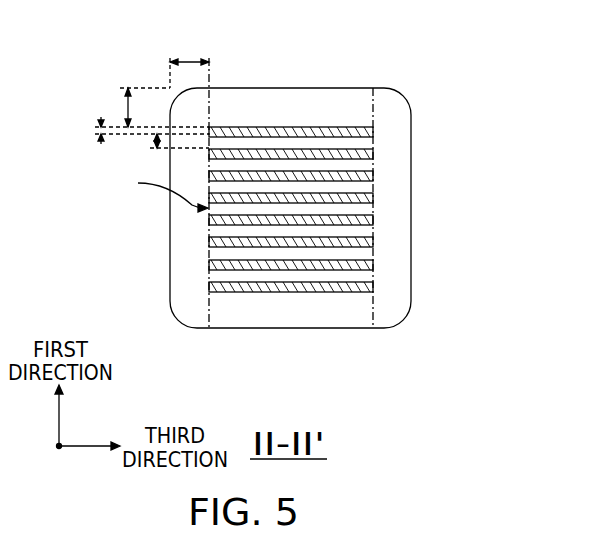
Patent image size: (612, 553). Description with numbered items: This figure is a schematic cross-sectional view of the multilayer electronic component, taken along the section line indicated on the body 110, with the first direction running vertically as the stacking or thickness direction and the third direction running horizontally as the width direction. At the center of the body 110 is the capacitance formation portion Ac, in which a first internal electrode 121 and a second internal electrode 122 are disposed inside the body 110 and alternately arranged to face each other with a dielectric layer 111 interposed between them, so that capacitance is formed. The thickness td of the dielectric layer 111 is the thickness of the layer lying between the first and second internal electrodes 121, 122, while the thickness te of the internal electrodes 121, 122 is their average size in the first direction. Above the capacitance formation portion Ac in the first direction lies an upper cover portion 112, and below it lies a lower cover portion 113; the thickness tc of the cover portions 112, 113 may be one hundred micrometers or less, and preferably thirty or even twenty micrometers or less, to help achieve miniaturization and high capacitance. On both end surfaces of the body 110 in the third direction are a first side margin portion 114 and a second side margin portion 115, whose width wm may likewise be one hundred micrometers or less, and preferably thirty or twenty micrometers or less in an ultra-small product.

The body 110 is at (276, 88).
The dielectric layer 111 is at (365, 163).
The upper cover portion 112 is at (226, 92).
The lower cover portion 113 is at (257, 314).
The first side margin portion 114 is at (175, 245).
The second side margin portion 115 is at (403, 242).
The first internal electrode 121 is at (325, 128).
The second internal electrode 122 is at (342, 158).
The width of the side margin portions wm is at (189, 64).
The thickness of the cover portions tc is at (152, 107).
The thickness of the internal electrodes te is at (136, 130).
The thickness of the dielectric layer td is at (170, 146).
The capacitance formation portion Ac is at (159, 191).